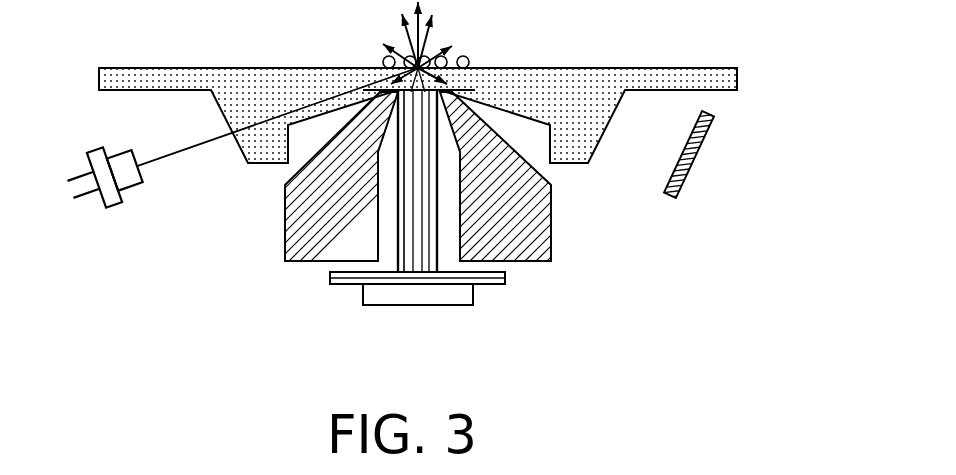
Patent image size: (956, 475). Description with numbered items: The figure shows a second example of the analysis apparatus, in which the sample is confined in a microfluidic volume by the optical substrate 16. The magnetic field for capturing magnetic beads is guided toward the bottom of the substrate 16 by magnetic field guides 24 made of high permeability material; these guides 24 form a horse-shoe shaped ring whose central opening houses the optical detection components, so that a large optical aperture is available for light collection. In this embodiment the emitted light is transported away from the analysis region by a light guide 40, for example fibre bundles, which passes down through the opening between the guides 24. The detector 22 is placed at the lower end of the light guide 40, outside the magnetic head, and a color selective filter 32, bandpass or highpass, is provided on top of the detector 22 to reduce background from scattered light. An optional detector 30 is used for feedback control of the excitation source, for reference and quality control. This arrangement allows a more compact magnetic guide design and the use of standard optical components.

The substrate 16 is at (737, 80).
The detector 22 is at (388, 300).
The magnetic field guides 24 is at (551, 236).
The detector 30 is at (700, 162).
The color selective filter 32 is at (505, 281).
The light guide 40 is at (413, 208).